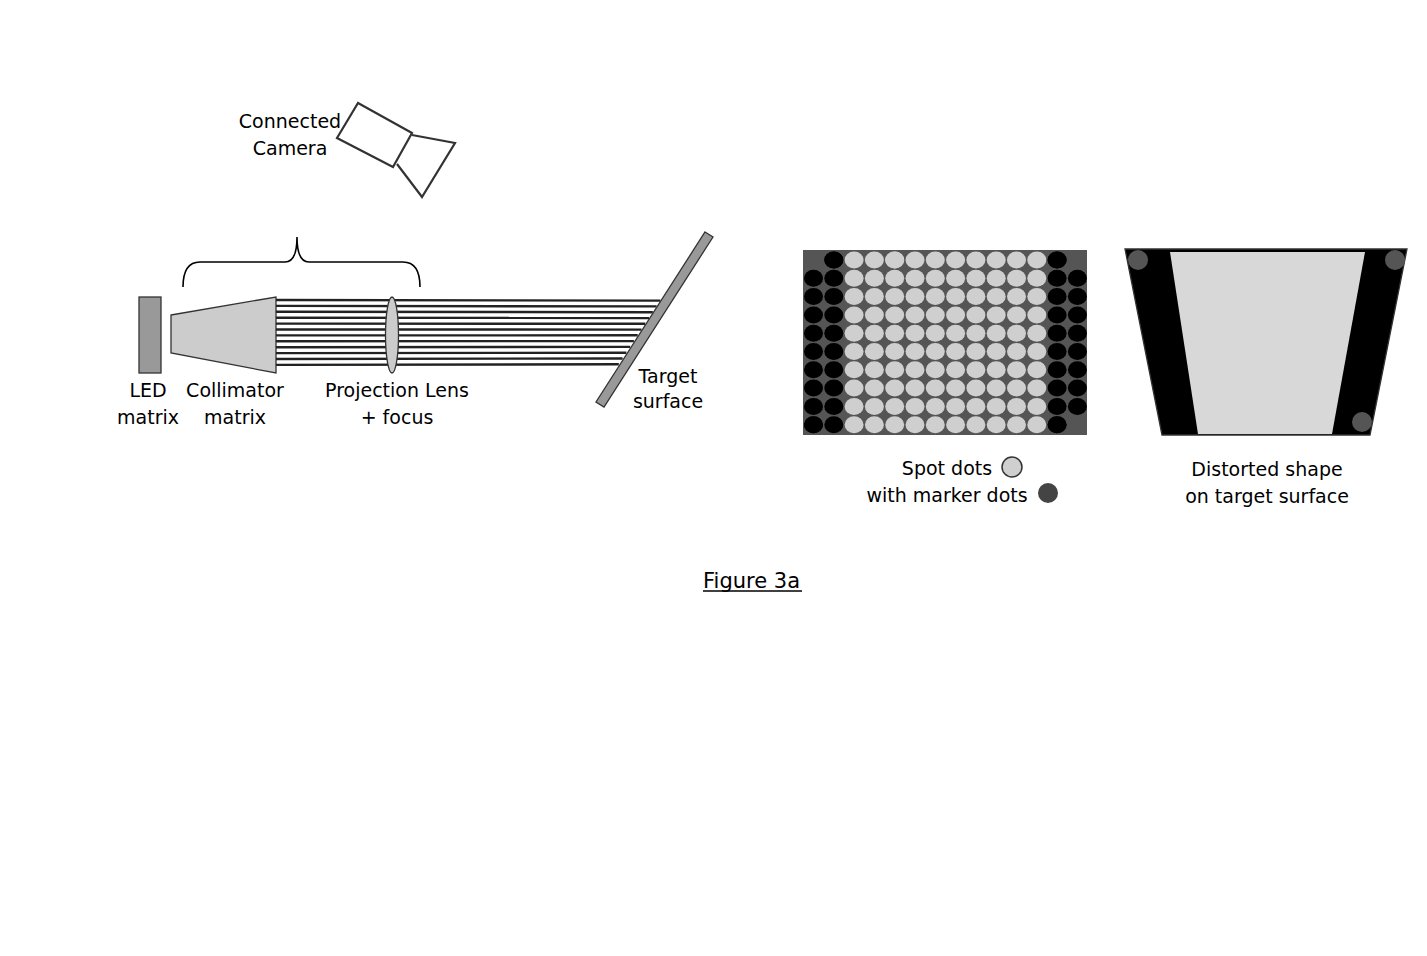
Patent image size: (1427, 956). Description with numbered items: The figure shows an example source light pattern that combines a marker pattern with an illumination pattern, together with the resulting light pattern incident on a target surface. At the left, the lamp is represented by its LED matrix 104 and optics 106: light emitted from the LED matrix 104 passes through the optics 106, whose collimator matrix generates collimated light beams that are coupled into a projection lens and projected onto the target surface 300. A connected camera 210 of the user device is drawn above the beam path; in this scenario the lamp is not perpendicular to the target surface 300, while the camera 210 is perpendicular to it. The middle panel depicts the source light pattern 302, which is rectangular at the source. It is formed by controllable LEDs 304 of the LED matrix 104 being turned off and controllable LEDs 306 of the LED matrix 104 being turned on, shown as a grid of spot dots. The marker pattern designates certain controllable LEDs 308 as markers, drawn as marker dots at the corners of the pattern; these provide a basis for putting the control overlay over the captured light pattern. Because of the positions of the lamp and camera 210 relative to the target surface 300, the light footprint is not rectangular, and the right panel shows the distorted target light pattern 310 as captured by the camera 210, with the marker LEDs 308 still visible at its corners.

The LED matrix 104 is at (137, 335).
The optics 106 is at (415, 292).
The camera 210 is at (382, 107).
The target surface 300 is at (703, 230).
The source light pattern 302 is at (963, 206).
The controllable LEDs turned off 304 is at (805, 428).
The controllable LEDs turned on 306 is at (892, 250).
The marker LEDs 308 is at (1112, 332).
The target light pattern 310 is at (1264, 206).